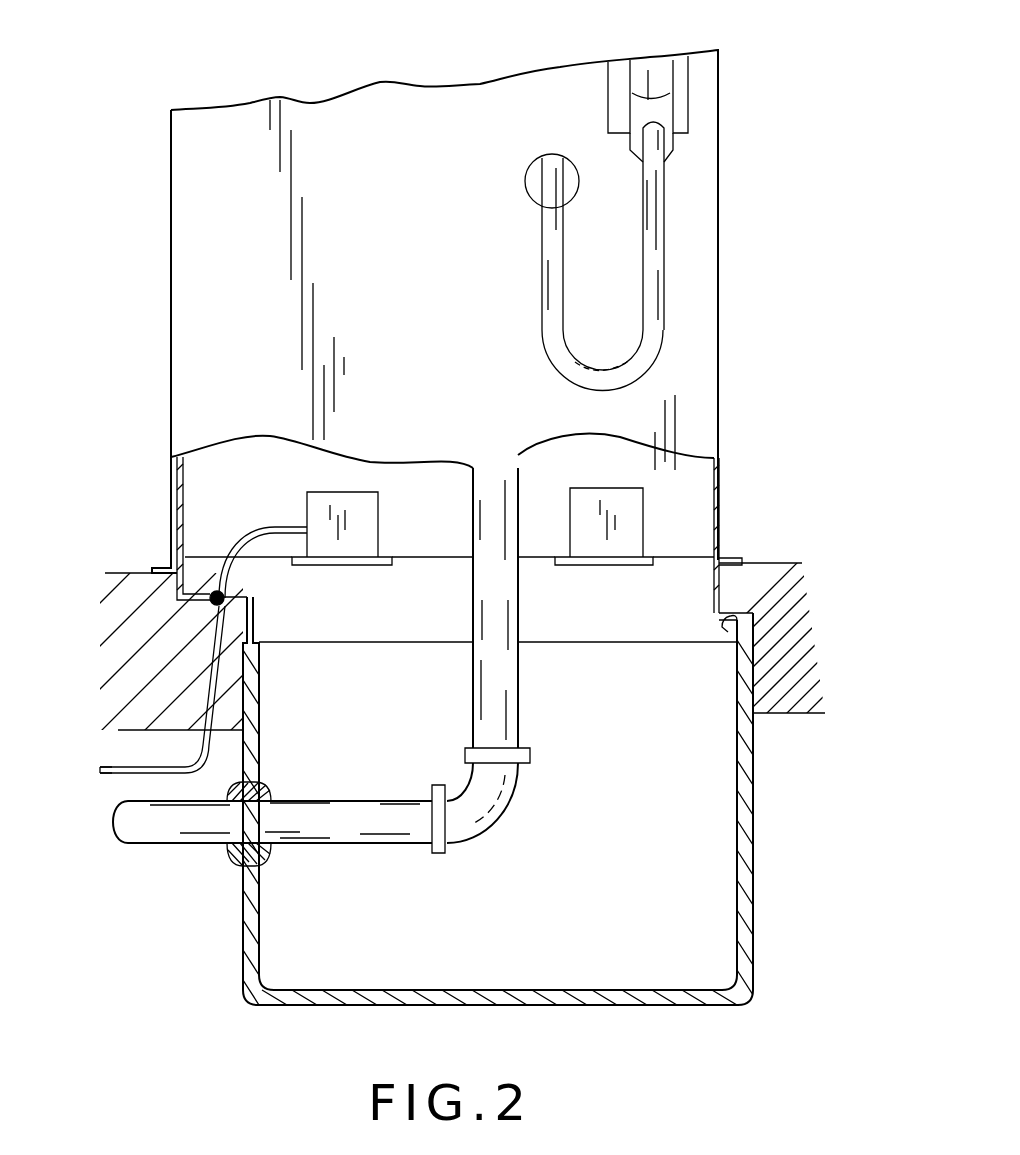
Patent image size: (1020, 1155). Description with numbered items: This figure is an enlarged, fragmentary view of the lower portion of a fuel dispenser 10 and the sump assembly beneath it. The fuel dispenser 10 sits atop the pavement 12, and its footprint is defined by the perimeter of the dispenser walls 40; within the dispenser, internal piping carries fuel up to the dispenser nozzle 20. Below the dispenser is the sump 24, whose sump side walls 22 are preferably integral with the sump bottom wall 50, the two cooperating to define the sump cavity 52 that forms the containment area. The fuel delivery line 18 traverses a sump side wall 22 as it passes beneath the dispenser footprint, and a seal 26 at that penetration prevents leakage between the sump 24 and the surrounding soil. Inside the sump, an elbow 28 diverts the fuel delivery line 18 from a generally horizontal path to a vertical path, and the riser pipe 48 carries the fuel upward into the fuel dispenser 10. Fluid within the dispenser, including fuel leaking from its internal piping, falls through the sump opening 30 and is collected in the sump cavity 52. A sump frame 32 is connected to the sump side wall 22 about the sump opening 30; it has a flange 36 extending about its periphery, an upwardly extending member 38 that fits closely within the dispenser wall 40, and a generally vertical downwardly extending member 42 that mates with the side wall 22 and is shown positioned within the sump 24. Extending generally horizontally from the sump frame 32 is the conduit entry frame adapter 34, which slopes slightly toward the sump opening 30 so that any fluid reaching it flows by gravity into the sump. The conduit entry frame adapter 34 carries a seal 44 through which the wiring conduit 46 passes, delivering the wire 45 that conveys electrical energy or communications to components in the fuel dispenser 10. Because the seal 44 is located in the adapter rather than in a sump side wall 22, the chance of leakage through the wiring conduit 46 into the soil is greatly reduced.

The fuel dispenser 10 is at (743, 90).
The pavement 12 is at (792, 620).
The fuel delivery line 18 is at (157, 845).
The dispenser nozzle 20 is at (648, 70).
The sump side wall 22 is at (755, 884).
The sump 24 is at (532, 826).
The seal 26 is at (240, 850).
The elbow 28 is at (490, 813).
The sump opening 30 is at (630, 628).
The sump frame 32 is at (728, 585).
The conduit entry frame adapter 34 is at (190, 597).
The flange 36 is at (732, 557).
The upwardly extending member 38 is at (213, 565).
The dispenser wall 40 is at (197, 287).
The downwardly extending member 42 is at (742, 628).
The seal 44 is at (230, 596).
The wire 45 is at (100, 772).
The wiring conduit 46 is at (206, 678).
The riser pipe 48 is at (473, 684).
The sump bottom wall 50 is at (573, 1005).
The sump cavity 52 is at (382, 952).